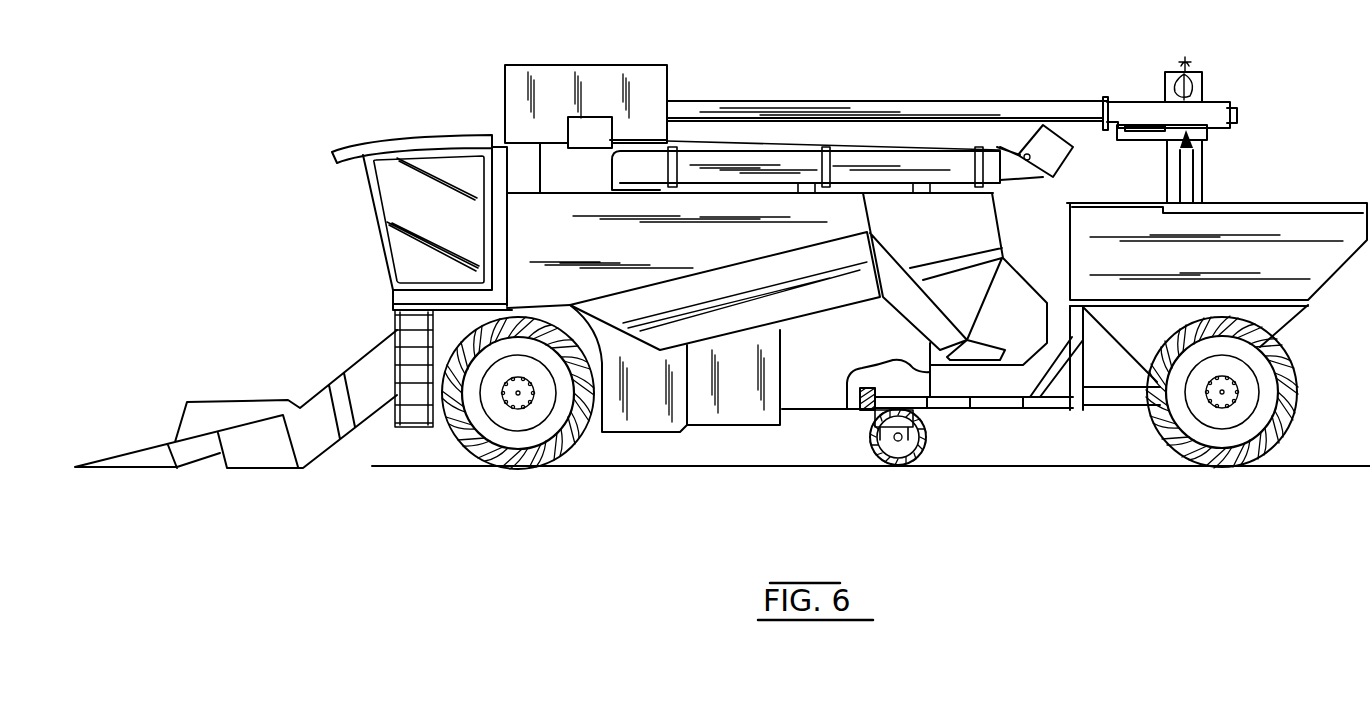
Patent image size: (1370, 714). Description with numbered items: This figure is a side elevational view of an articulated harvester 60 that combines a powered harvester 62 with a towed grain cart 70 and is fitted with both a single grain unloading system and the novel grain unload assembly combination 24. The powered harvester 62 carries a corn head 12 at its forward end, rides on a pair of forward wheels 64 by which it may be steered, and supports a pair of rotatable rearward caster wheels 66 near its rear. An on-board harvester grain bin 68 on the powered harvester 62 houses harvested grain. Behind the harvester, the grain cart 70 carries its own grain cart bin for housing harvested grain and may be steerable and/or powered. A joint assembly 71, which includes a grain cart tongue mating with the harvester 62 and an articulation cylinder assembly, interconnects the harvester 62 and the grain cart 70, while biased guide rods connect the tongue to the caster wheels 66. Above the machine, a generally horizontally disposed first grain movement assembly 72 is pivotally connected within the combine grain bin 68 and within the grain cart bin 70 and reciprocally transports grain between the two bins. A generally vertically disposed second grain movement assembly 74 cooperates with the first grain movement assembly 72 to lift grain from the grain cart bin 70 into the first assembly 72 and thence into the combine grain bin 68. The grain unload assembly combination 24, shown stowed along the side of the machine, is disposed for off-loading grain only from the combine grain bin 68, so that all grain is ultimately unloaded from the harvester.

The corn head 12 is at (243, 400).
The grain unload assembly combination 24 is at (887, 153).
The articulated harvester 60 is at (852, 72).
The powered harvester 62 is at (476, 66).
The forward wheels 64 is at (490, 452).
The rearward caster wheels 66 is at (890, 465).
The harvester grain bin 68 is at (707, 203).
The grain cart 70 is at (1302, 200).
The joint assembly 71 is at (993, 430).
The first grain movement assembly 72 is at (993, 101).
The second grain movement assembly 74 is at (1203, 158).